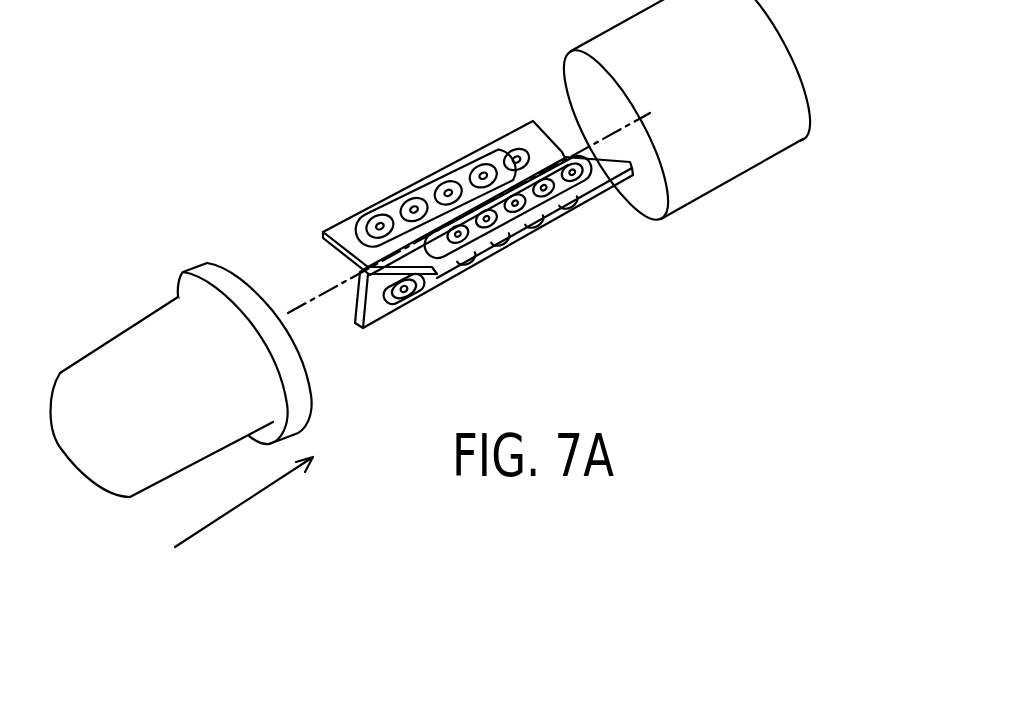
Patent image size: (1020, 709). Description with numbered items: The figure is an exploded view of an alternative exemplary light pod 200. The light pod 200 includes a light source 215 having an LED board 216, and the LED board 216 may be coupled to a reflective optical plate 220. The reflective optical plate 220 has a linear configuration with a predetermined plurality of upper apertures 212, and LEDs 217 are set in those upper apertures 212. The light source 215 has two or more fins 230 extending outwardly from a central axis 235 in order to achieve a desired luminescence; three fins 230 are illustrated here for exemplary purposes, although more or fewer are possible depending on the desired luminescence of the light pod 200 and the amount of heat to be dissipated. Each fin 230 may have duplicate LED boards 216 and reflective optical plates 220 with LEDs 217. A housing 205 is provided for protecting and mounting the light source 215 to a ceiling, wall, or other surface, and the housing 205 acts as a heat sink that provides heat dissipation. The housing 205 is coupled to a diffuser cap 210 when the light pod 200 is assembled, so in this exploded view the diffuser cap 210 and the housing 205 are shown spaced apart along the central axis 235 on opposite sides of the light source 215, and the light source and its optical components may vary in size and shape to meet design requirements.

The light pod 200 is at (800, 216).
The housing 205 is at (786, 39).
The diffuser cap 210 is at (313, 396).
The upper apertures 212 is at (480, 168).
The light source 215 is at (325, 158).
The LED board 216 is at (543, 240).
The LEDs 217 is at (515, 156).
The reflective optical plate 220 is at (400, 195).
The fins 230 is at (432, 298).
The central axis 235 is at (303, 303).